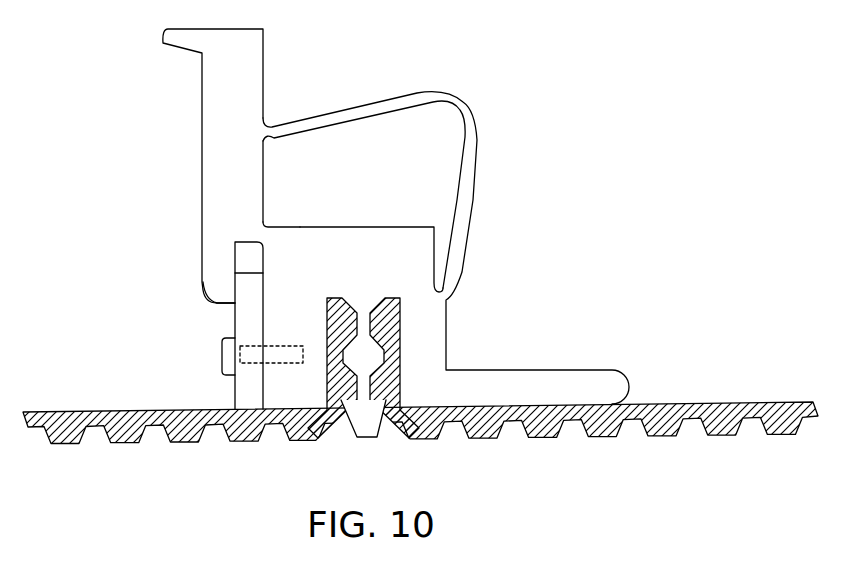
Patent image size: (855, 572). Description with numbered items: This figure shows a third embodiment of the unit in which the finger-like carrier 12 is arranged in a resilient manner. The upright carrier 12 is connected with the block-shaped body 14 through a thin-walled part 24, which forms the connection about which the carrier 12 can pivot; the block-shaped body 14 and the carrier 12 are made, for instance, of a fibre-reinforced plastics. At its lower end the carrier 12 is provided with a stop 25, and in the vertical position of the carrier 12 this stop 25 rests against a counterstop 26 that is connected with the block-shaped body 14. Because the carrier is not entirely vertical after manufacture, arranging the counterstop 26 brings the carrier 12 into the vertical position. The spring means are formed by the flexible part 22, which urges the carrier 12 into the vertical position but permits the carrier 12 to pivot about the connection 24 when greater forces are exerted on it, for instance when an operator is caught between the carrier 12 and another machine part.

The carrier 12 is at (232, 78).
The block-shaped body 14 is at (360, 253).
The flexible part 22 is at (468, 178).
The thin-walled part 24 is at (263, 233).
The stop 25 is at (222, 286).
The counterstop 26 is at (248, 325).